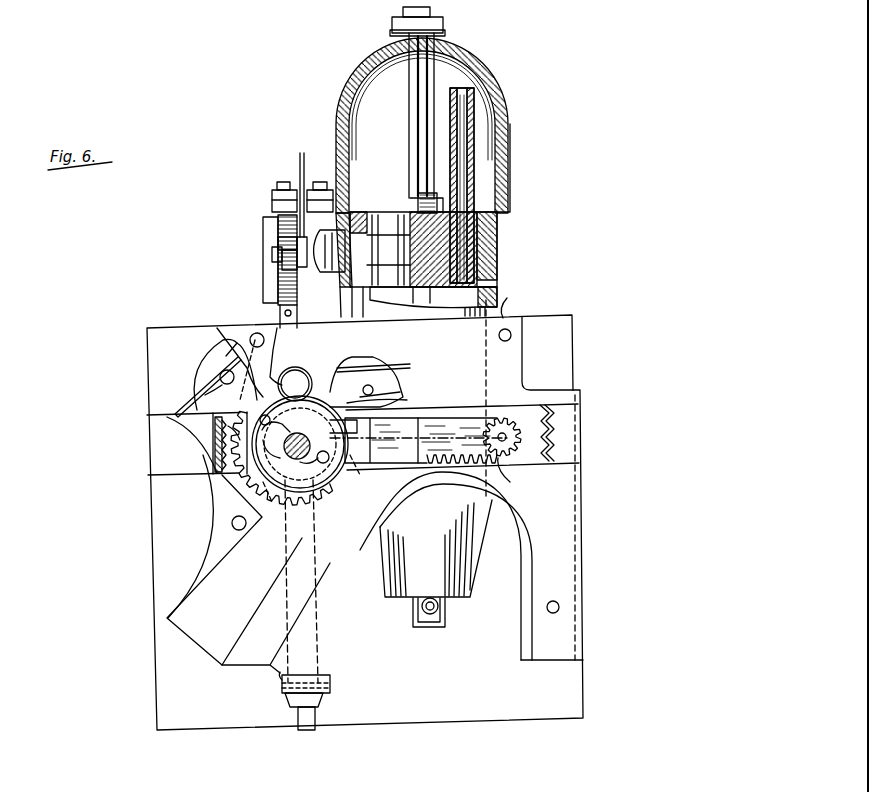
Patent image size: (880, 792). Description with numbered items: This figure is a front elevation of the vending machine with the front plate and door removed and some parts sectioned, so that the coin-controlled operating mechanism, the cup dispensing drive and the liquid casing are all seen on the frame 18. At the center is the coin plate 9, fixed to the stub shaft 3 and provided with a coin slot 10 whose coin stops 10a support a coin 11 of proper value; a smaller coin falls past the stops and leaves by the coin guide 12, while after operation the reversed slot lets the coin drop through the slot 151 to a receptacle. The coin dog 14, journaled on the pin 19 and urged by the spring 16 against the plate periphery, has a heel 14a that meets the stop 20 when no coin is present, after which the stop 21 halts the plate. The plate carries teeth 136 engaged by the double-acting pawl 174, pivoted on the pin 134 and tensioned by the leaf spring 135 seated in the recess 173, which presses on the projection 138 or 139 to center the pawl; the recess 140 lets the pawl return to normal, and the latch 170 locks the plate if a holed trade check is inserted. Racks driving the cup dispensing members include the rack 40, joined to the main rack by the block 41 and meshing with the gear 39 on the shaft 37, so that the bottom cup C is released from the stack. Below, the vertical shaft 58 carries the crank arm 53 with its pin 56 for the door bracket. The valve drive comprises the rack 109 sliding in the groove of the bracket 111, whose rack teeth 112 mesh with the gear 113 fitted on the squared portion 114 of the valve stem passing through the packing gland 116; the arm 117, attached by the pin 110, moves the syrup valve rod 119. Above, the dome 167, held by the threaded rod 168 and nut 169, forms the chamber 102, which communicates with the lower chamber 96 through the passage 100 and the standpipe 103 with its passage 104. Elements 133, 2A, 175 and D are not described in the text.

The coin guide 12 is at (200, 623).
The bottom cup C is at (452, 568).
The slot 151 is at (302, 572).
The pivot bearing 133 is at (442, 605).
The crank arm 53 is at (332, 684).
The vertical shaft 58 is at (281, 683).
The pin 56 is at (317, 714).
The block 41 is at (418, 434).
The latch 170 is at (419, 419).
The gear 39 is at (508, 413).
The rack 40 is at (512, 480).
The shaft 37 is at (530, 443).
The coin dog 14 is at (367, 367).
The spring 16 is at (400, 364).
The pin 19 is at (373, 389).
The stop 20 is at (400, 392).
The heel 14a is at (393, 403).
The coin plate 9 is at (337, 362).
The coin stops 10a is at (340, 353).
The teeth 136 is at (247, 488).
The stub shaft 3 is at (294, 439).
The coin slot 10 is at (292, 347).
The stop 21 is at (245, 338).
The coin 11 is at (296, 383).
The leaf spring 135 is at (205, 362).
The pin 134 is at (233, 353).
The projection 139 is at (220, 380).
The double-acting pawl 174 is at (205, 398).
The recess 173 is at (175, 414).
The projection 138 is at (215, 332).
The recess 140 is at (233, 434).
The ratchet pawl 2A is at (214, 430).
The rack teeth 112 is at (280, 284).
The bracket 111 is at (267, 228).
The pin 110 is at (278, 242).
The squared portion 114 is at (275, 256).
The gear 113 is at (283, 263).
The arm 117 is at (275, 200).
The rack 109 is at (283, 181).
The syrup valve rod 119 is at (322, 182).
The packing gland 116 is at (300, 165).
The cup 175 is at (318, 274).
The chamber 102 is at (455, 72).
The dome 167 is at (345, 82).
The screw threaded rod 168 is at (409, 12).
The nut 169 is at (445, 27).
The standpipe 103 is at (488, 153).
The passage 104 is at (460, 92).
The direction arrow D is at (531, 119).
The passage 100 is at (470, 261).
The chamber 96 is at (497, 285).
The frame 18 is at (516, 307).